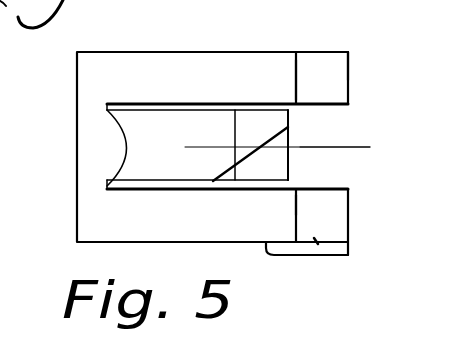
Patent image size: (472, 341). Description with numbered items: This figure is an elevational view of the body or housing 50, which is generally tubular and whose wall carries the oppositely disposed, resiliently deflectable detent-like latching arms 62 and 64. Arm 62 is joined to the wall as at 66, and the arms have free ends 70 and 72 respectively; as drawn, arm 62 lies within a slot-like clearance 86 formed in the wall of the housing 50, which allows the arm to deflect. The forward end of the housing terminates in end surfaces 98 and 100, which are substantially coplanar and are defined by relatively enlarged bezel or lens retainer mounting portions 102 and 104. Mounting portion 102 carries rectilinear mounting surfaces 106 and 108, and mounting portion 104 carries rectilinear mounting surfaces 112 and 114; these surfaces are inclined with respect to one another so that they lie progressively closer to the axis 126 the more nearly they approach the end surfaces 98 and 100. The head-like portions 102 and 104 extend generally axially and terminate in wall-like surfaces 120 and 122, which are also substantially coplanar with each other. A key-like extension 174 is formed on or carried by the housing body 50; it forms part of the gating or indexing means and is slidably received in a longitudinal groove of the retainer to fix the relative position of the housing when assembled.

The body or housing 50 is at (137, 58).
The latching arm 62 is at (256, 153).
The latching arm 64 is at (283, 160).
The joint of latching arm to wall 66 is at (127, 163).
The free end of latching arm 70 is at (291, 126).
The free end of latching arm 72 is at (292, 173).
The slot-like clearance 86 is at (257, 112).
The end surface 98 is at (351, 63).
The end surface 100 is at (349, 228).
The bezel or lens retainer mounting portion 102 is at (349, 51).
The bezel or lens retainer mounting portion 104 is at (315, 242).
The rectilinear mounting surface 106 is at (336, 92).
The rectilinear mounting surface 108 is at (343, 16).
The rectilinear mounting surface 112 is at (328, 207).
The rectilinear mounting surface 114 is at (317, 241).
The wall-like surface 120 is at (295, 79).
The wall-like surface 122 is at (294, 203).
The axis 126 is at (352, 147).
The key-like extension 174 is at (294, 252).